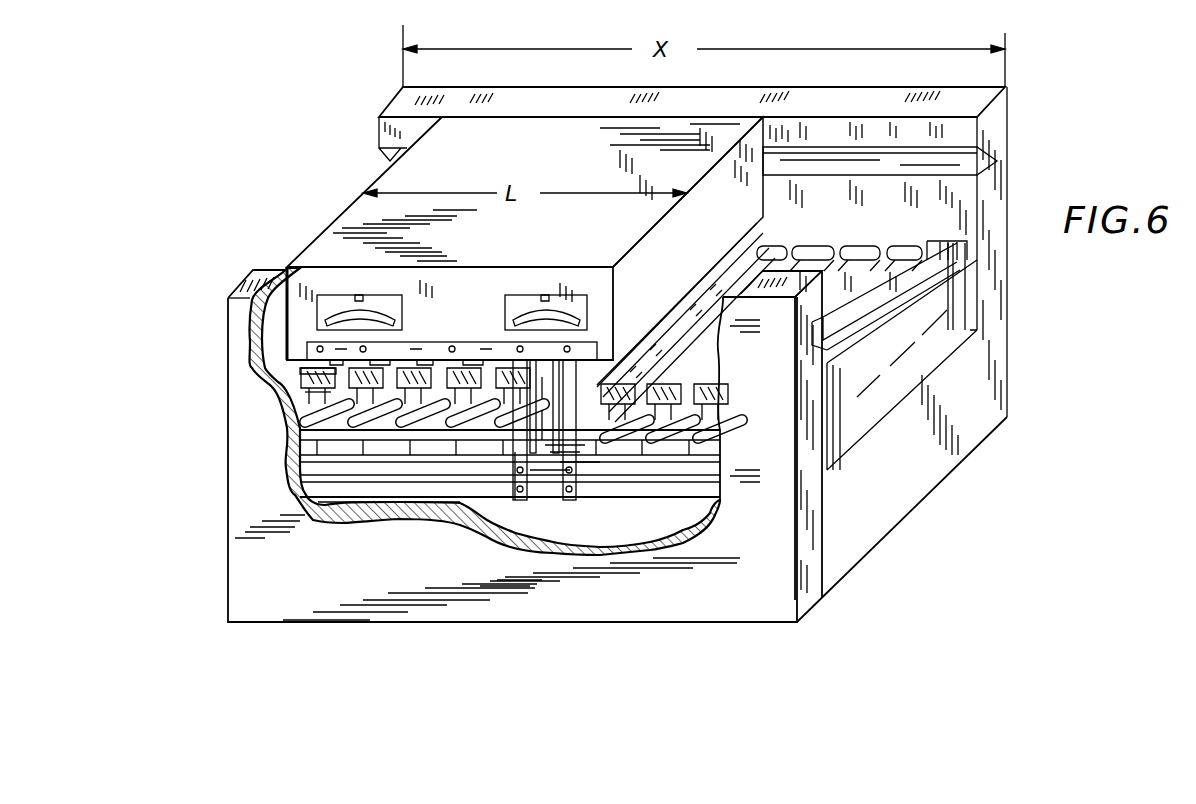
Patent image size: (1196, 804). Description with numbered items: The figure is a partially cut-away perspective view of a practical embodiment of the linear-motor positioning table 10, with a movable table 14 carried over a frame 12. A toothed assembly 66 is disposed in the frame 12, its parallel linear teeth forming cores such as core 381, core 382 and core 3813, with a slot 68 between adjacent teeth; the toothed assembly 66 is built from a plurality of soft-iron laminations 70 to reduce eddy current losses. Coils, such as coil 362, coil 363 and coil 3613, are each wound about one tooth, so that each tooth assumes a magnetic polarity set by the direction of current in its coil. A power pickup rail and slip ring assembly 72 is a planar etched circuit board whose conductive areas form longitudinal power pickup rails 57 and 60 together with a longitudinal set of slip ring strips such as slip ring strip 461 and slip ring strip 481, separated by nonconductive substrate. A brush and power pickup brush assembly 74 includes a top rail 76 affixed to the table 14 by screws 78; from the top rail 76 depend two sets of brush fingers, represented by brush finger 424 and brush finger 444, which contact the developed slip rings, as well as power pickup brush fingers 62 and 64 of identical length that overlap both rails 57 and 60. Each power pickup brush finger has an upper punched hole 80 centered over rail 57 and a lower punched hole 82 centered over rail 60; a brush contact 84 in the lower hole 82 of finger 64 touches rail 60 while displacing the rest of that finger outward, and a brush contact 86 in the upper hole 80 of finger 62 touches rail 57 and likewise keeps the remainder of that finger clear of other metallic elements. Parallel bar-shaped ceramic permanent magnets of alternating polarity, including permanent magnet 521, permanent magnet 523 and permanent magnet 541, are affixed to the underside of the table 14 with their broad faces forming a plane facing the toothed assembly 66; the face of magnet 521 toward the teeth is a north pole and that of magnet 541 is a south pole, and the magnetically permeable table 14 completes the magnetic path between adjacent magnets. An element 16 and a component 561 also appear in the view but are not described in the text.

The positioning table 10 is at (210, 518).
The frame 12 is at (770, 570).
The table 14 is at (322, 244).
The rear wall rail 16 is at (992, 155).
The coil 3613 is at (933, 253).
The coil 362 is at (310, 433).
The coil 363 is at (373, 444).
The core 381 is at (298, 374).
The core 382 is at (297, 394).
The core 3813 is at (907, 250).
The brush finger 424 is at (542, 377).
The brush finger 444 is at (603, 346).
The slip ring strip 461 is at (308, 464).
The slip ring strip 481 is at (345, 454).
The permanent magnet 521 is at (308, 362).
The permanent magnet 523 is at (759, 225).
The permanent magnet 541 is at (413, 352).
The insulator layer 561 is at (313, 509).
The power pickup rail 57 is at (413, 468).
The power pickup rail 60 is at (458, 491).
The power pickup brush finger 62 is at (507, 452).
The power pickup brush finger 64 is at (583, 470).
The toothed assembly 66 is at (905, 369).
The slot 68 is at (883, 250).
The lamination 70 is at (830, 468).
The power pickup rail and slip ring assembly 72 is at (717, 508).
The brush and power pickup brush assembly 74 is at (590, 336).
The top rail 76 is at (428, 342).
The screw 78 is at (468, 327).
The upper punched hole 80 is at (522, 492).
The lower punched hole 82 is at (577, 483).
The brush contact 84 is at (566, 478).
The brush contact 86 is at (500, 478).